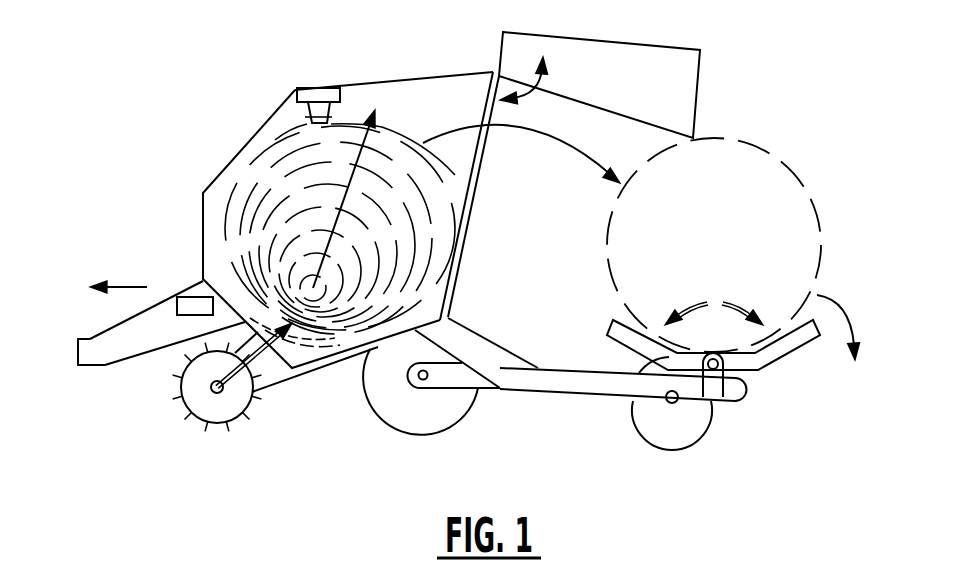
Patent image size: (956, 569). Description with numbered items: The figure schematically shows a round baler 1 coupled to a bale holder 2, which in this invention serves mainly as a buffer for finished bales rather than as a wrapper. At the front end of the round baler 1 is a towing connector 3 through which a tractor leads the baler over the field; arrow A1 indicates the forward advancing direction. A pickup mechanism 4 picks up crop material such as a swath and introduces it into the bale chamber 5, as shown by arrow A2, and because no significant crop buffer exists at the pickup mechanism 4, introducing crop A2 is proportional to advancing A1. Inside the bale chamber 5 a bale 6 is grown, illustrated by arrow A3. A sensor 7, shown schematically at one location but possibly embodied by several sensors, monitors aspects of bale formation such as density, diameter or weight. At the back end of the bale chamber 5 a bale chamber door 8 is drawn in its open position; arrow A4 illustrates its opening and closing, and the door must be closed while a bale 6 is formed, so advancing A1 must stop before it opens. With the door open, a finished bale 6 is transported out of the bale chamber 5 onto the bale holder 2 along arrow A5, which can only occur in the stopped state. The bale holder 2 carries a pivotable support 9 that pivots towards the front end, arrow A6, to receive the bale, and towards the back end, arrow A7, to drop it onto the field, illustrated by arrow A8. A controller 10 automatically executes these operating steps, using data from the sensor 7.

The round baler 1 is at (244, 83).
The bale holder 2 is at (745, 432).
The towing connector 3 is at (95, 355).
The pickup mechanism 4 is at (238, 403).
The bale chamber 5 is at (423, 97).
The bale 6 is at (237, 222).
The sensor 7 is at (318, 87).
The bale chamber door 8 is at (532, 43).
The support 9 is at (757, 365).
The controller 10 is at (188, 303).
The forward advancing direction A1 is at (118, 287).
The introducing of crop material A2 is at (270, 352).
The growing of the bale A3 is at (363, 138).
The opening and closing of the bale chamber door A4 is at (548, 76).
The transporting of the finished bale A5 is at (558, 150).
The pivoting towards the front end A6 is at (680, 297).
The pivoting towards the back end A7 is at (747, 297).
The dropping of the bale A8 is at (843, 300).